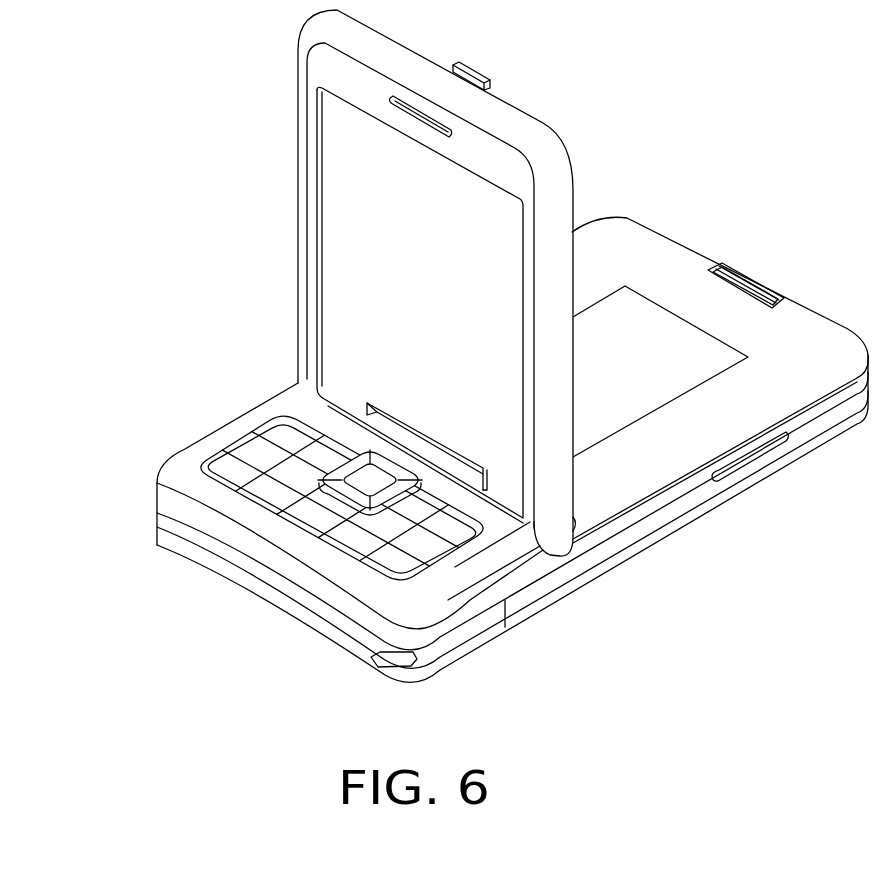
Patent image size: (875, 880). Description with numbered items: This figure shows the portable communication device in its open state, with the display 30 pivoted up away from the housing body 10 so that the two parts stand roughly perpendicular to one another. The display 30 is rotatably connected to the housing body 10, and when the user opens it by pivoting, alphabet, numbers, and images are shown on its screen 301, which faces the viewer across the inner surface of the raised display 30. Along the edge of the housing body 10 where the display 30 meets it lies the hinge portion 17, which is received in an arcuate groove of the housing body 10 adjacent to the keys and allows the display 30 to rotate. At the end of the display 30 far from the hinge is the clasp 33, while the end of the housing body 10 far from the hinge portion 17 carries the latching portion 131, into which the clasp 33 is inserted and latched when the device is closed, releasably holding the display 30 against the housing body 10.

The housing body 10 is at (228, 534).
The hinge portion 17 is at (393, 437).
The display 30 is at (558, 190).
The clasp 33 is at (472, 72).
The latching portion 131 is at (737, 277).
The screen 301 is at (347, 180).